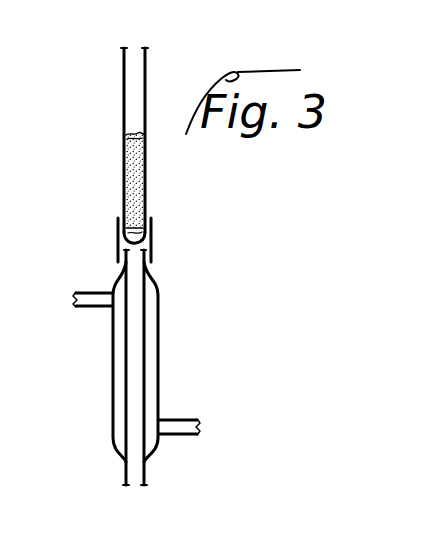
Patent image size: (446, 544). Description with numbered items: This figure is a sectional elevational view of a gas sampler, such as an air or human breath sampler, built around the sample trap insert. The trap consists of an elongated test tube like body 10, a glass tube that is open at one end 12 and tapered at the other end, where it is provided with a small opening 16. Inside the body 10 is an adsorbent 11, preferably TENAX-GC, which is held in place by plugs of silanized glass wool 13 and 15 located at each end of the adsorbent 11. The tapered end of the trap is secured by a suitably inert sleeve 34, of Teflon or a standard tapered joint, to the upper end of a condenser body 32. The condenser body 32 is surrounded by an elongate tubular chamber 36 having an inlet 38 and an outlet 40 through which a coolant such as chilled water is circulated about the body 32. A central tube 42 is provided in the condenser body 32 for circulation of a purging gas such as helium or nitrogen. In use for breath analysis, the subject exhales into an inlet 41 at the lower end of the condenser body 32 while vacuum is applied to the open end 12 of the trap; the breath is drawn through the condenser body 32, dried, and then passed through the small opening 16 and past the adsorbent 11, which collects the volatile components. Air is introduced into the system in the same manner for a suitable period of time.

The test tube like body 10 is at (122, 81).
The adsorbent 11 is at (133, 173).
The open end 12 is at (121, 47).
The silanized glass wool 13 is at (134, 137).
The silanized glass wool 15 is at (131, 226).
The small opening 16 is at (144, 243).
The condenser body 32 is at (147, 268).
The sleeve 34 is at (117, 246).
The elongate tubular chamber 36 is at (160, 360).
The inlet 38 is at (92, 308).
The outlet 40 is at (175, 419).
The inlet 41 is at (134, 487).
The central tube 42 is at (148, 322).